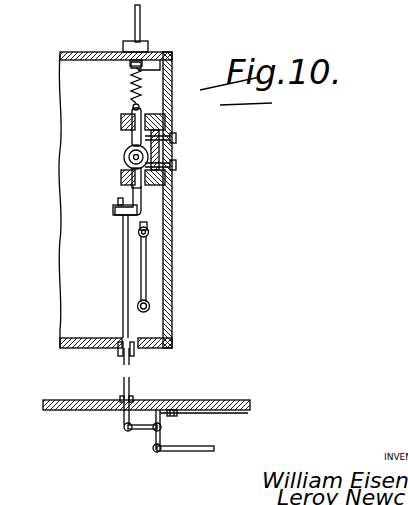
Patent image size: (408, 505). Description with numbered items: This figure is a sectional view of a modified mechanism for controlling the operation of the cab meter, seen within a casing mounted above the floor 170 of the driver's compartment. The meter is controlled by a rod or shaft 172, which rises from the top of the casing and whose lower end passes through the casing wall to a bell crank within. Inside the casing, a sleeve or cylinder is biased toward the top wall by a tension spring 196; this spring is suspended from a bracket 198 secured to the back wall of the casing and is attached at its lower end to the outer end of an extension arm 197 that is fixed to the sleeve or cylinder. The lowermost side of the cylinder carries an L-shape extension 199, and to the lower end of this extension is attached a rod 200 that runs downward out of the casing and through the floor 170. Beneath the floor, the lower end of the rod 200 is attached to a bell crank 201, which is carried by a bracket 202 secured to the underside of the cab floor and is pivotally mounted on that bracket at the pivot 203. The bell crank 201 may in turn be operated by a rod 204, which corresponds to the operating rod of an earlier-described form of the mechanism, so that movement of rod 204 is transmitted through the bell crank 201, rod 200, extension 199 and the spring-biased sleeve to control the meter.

The rod or shaft 172 is at (140, 17).
The bracket 198 is at (133, 65).
The tension spring 196 is at (131, 92).
The extension arm 197 is at (130, 136).
The L-shape extension 199 is at (135, 196).
The rod 200 is at (120, 292).
The floor 170 is at (66, 412).
The bracket 202 is at (217, 420).
The pivot 203 is at (161, 428).
The bell crank 201 is at (154, 434).
The rod 204 is at (190, 451).